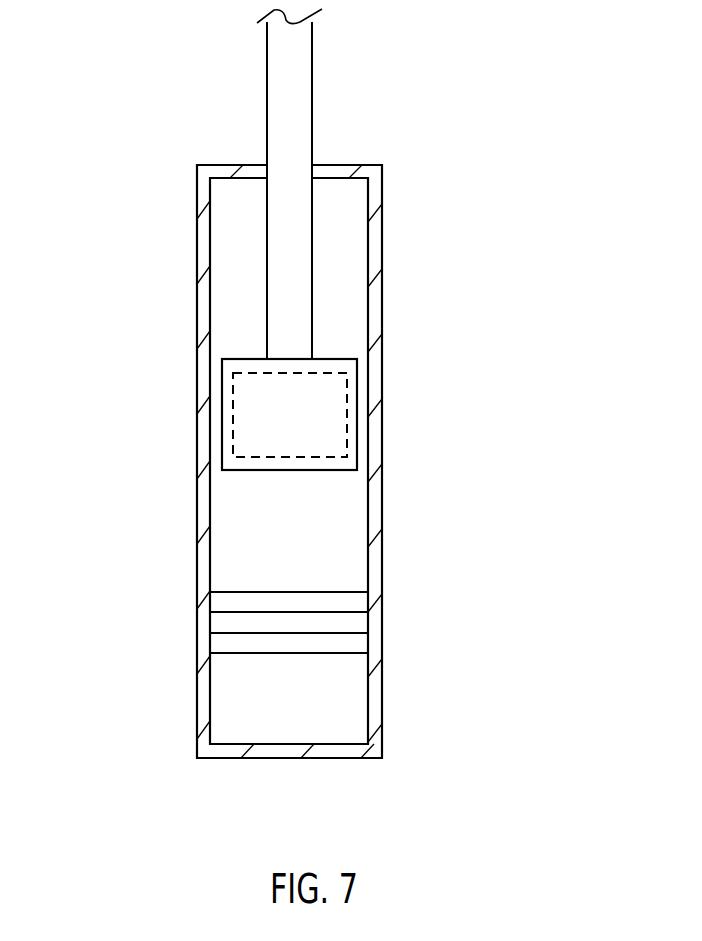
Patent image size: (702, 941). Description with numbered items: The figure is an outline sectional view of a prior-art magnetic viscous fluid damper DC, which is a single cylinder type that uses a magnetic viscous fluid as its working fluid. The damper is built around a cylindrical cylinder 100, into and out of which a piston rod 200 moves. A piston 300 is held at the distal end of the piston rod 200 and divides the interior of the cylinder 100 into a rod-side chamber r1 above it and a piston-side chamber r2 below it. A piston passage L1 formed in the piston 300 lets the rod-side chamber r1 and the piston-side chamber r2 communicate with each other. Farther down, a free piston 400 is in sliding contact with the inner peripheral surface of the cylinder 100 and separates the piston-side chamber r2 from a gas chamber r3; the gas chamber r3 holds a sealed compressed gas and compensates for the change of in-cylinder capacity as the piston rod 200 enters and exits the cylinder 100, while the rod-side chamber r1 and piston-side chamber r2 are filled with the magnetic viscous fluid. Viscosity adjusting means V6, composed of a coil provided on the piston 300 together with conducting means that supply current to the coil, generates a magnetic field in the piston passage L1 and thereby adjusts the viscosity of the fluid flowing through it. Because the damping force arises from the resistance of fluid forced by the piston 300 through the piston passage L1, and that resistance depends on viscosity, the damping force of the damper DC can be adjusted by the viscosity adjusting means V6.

The cylinder 100 is at (382, 315).
The piston rod 200 is at (267, 81).
The piston 300 is at (222, 382).
The free piston 400 is at (368, 632).
The viscosity adjusting means V6 is at (347, 425).
The magnetic viscous fluid damper DC is at (396, 97).
The rod-side chamber r1 is at (217, 275).
The piston-side chamber r2 is at (227, 565).
The gas chamber r3 is at (229, 703).
The piston passage L1 is at (215, 427).